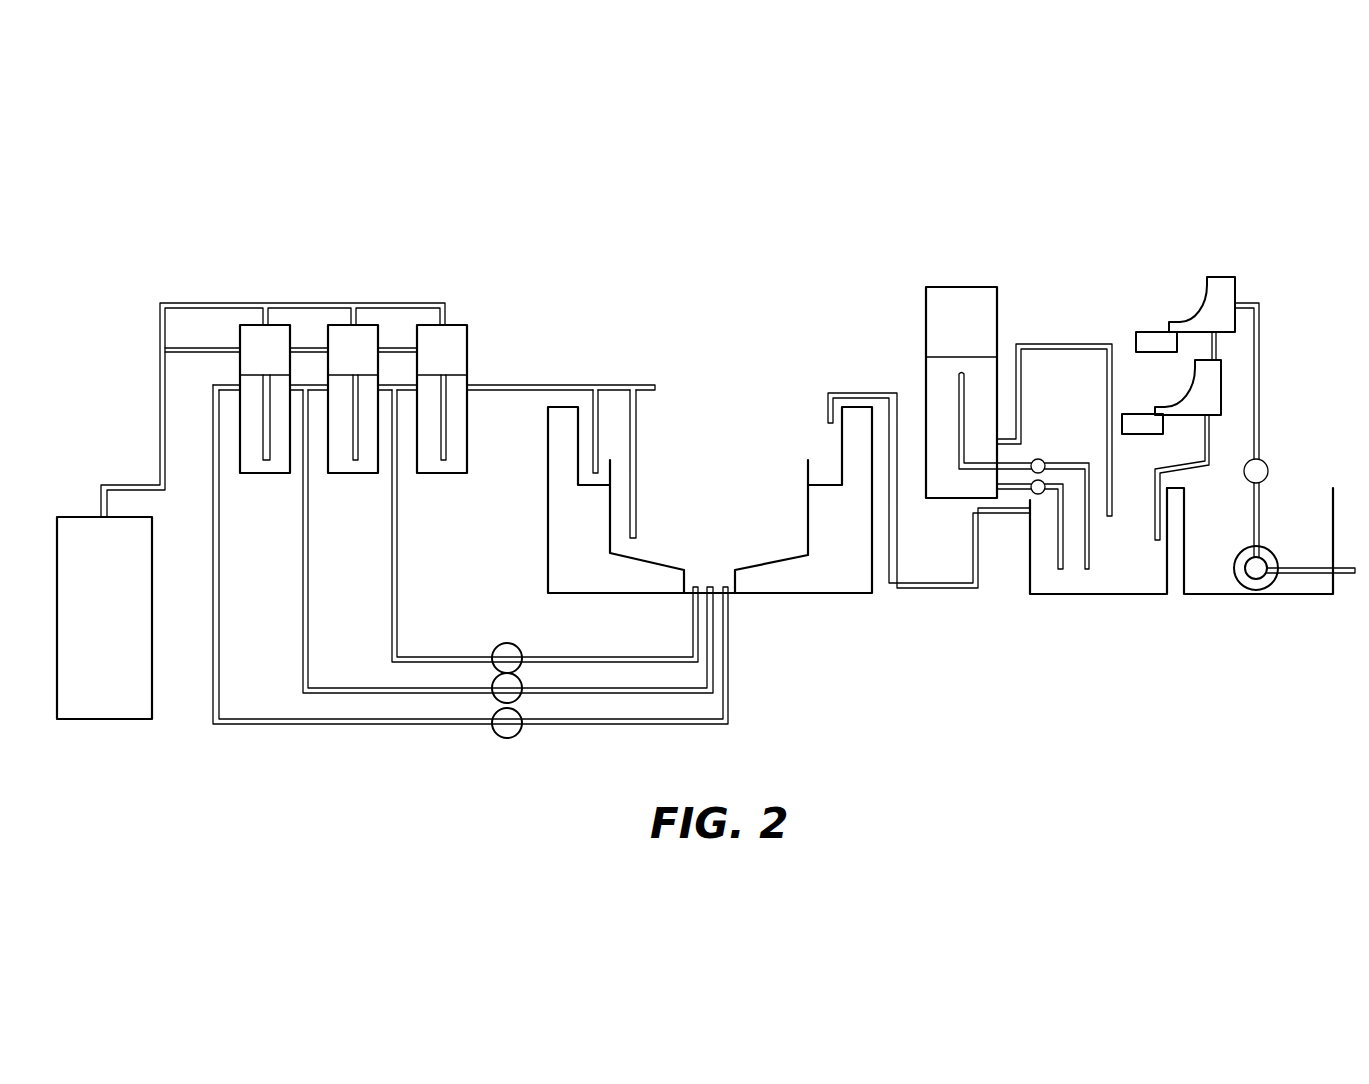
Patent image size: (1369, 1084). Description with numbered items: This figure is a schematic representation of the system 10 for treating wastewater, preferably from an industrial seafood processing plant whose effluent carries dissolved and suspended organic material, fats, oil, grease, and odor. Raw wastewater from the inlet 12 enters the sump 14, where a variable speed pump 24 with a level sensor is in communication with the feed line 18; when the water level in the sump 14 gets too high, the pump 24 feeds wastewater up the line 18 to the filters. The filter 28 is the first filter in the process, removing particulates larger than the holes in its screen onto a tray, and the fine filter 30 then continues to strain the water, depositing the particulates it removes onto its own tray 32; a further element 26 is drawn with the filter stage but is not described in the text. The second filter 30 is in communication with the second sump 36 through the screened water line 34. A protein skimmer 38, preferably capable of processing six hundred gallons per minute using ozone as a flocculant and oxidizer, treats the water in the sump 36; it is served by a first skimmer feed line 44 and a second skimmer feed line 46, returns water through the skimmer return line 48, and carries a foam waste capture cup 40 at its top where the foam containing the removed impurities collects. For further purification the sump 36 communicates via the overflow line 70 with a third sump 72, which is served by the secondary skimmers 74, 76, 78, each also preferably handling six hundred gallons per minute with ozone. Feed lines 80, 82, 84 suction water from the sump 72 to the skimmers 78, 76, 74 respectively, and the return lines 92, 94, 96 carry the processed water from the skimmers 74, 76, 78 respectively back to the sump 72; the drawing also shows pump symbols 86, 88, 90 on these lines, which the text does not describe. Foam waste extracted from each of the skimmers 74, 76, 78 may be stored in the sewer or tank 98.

The system 10 is at (371, 184).
The inlet 12 is at (1342, 577).
The sump 14 is at (1293, 597).
The feed line 18 is at (1259, 385).
The variable speed pump 24 is at (1280, 540).
The first hopper 26 is at (1232, 323).
The filter 28 is at (1140, 332).
The fine filter 30 is at (1217, 405).
The tray 32 is at (1135, 414).
The screened water line 34 is at (1158, 542).
The second sump 36 is at (1115, 597).
The protein skimmer 38 is at (907, 280).
The foam waste capture cup 40 is at (974, 337).
The first skimmer feed line 44 is at (1060, 570).
The second skimmer feed line 46 is at (1086, 570).
The skimmer return line 48 is at (1053, 344).
The overflow line 70 is at (932, 590).
The third sump 72 is at (809, 595).
The secondary skimmer 74 is at (486, 315).
The secondary skimmer 76 is at (396, 315).
The secondary skimmer 78 is at (309, 315).
The feed line 80 is at (708, 727).
The feed line 82 is at (667, 695).
The feed line 84 is at (628, 663).
The first pump 86 is at (506, 738).
The second pump 88 is at (519, 700).
The third pump 90 is at (506, 642).
The return line 92 is at (444, 462).
The return line 94 is at (355, 462).
The return line 96 is at (267, 462).
The sewer or tank 98 is at (120, 637).